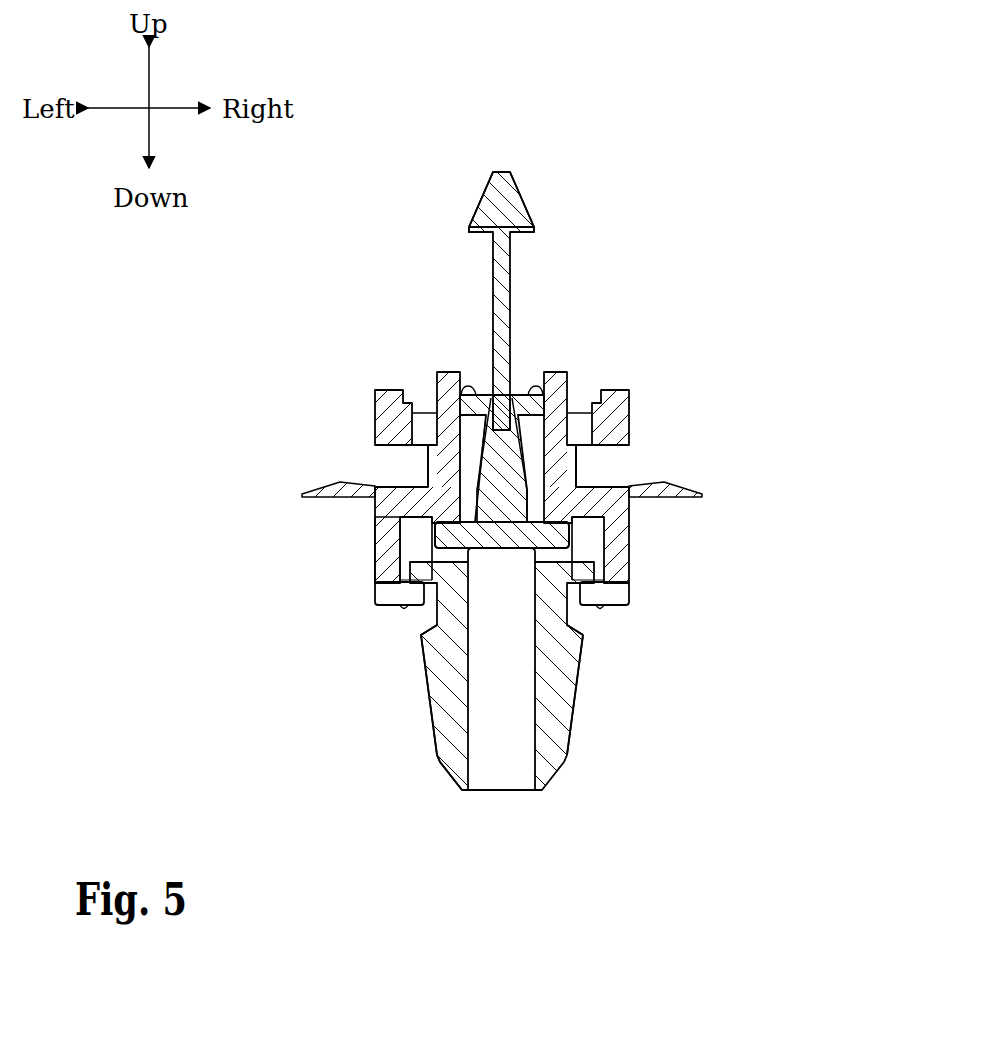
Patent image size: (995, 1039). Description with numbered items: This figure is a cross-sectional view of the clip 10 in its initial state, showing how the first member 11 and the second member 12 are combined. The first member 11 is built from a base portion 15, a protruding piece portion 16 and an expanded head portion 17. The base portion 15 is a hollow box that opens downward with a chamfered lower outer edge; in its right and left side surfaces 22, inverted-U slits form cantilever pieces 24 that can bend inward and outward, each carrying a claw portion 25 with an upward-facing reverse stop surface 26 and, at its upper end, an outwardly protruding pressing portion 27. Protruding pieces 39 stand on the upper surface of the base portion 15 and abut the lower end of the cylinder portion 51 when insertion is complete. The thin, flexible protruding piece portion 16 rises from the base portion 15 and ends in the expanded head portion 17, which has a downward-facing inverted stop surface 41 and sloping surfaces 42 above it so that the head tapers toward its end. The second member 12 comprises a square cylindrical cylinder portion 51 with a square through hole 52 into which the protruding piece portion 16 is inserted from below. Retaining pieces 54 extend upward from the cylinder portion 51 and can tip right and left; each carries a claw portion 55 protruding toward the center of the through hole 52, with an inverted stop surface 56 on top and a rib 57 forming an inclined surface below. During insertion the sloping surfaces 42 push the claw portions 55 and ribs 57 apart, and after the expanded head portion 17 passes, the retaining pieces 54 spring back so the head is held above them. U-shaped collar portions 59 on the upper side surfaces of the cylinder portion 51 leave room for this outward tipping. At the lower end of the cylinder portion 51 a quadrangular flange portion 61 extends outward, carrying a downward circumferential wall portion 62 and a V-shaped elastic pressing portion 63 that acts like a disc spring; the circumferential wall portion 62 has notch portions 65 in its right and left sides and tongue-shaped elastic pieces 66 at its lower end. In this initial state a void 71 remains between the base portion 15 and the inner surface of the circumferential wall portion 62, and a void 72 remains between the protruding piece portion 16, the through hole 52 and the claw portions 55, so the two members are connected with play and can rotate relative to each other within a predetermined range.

The clip 10 is at (358, 235).
The first member 11 is at (451, 801).
The second member 12 is at (628, 386).
The base portion 15 is at (574, 742).
The protruding piece portion 16 is at (513, 284).
The expanded head portion 17 is at (486, 166).
The side surface 22 is at (436, 723).
The cantilever piece 24 is at (560, 712).
The claw portion 25 is at (579, 656).
The reverse stop surface 26 is at (585, 632).
The pressing portion 27 is at (400, 595).
The protruding piece 39 is at (602, 531).
The inverted stop surface 41 is at (522, 236).
The sloping surface 42 is at (518, 193).
The cylinder portion 51 is at (552, 452).
The through hole 52 is at (480, 471).
The retaining piece 54 is at (445, 374).
The claw portion 55 is at (466, 388).
The inverted stop surface 56 is at (470, 386).
The rib 57 is at (405, 424).
The collar portion 59 is at (385, 401).
The flange portion 61 is at (606, 489).
The circumferential wall portion 62 is at (392, 536).
The elastic pressing portion 63 is at (322, 490).
The notch portion 65 is at (416, 548).
The elastic piece 66 is at (412, 607).
The void 71 is at (424, 576).
The void 72 is at (468, 452).